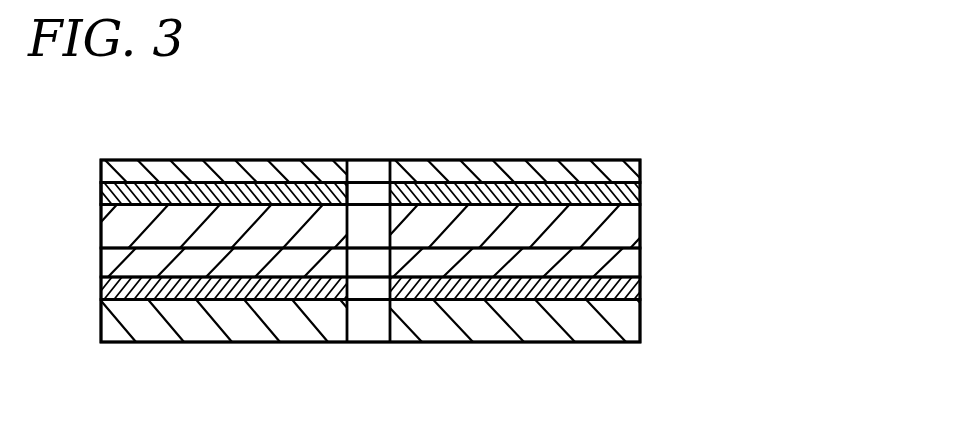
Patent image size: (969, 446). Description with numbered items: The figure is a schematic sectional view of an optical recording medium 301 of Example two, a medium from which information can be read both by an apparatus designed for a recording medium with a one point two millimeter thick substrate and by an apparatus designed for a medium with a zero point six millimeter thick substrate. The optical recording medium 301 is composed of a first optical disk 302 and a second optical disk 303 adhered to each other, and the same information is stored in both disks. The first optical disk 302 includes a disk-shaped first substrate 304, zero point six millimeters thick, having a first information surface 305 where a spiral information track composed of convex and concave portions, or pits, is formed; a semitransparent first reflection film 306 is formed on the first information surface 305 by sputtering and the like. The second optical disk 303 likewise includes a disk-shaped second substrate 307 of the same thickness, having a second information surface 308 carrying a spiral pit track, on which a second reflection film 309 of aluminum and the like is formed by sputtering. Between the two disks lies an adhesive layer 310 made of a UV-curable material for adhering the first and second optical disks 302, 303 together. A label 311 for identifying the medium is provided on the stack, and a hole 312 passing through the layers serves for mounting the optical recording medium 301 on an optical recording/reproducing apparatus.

The optical recording medium 301 is at (565, 158).
The first optical disk 302 is at (471, 333).
The second optical disk 303 is at (471, 160).
The first substrate 304 is at (627, 320).
The first information surface 305 is at (527, 300).
The first reflection film 306 is at (630, 287).
The second substrate 307 is at (625, 220).
The second information surface 308 is at (240, 204).
The second reflection film 309 is at (640, 188).
The adhesive layer 310 is at (630, 257).
The label 311 is at (640, 168).
The hole 312 is at (368, 345).